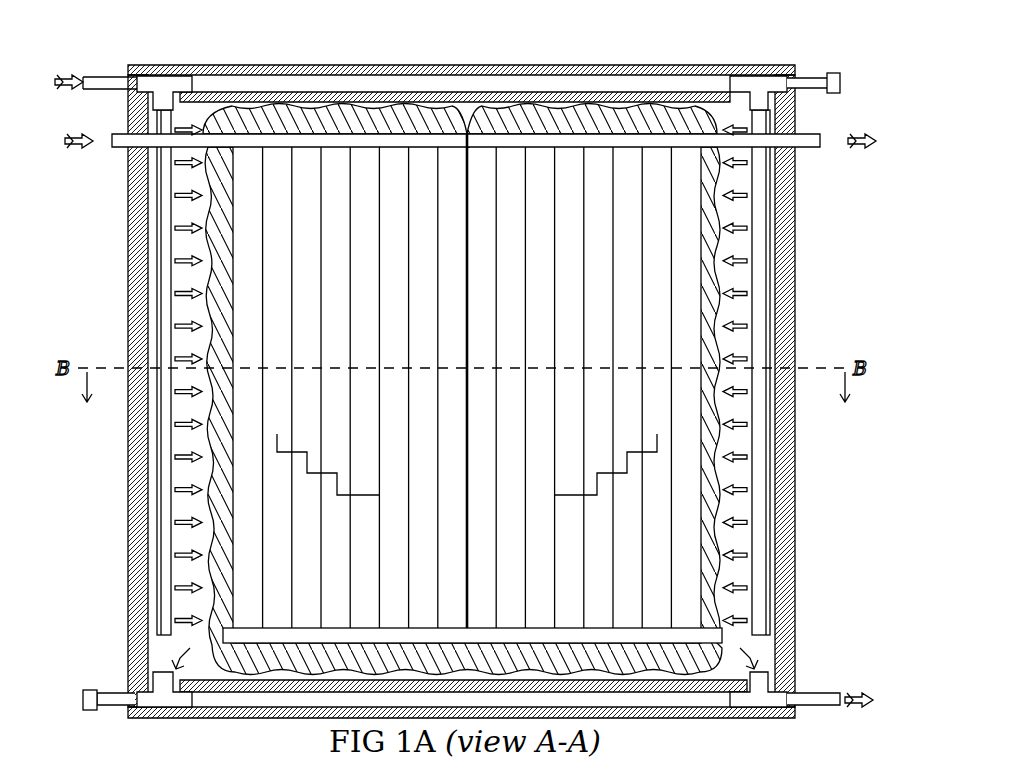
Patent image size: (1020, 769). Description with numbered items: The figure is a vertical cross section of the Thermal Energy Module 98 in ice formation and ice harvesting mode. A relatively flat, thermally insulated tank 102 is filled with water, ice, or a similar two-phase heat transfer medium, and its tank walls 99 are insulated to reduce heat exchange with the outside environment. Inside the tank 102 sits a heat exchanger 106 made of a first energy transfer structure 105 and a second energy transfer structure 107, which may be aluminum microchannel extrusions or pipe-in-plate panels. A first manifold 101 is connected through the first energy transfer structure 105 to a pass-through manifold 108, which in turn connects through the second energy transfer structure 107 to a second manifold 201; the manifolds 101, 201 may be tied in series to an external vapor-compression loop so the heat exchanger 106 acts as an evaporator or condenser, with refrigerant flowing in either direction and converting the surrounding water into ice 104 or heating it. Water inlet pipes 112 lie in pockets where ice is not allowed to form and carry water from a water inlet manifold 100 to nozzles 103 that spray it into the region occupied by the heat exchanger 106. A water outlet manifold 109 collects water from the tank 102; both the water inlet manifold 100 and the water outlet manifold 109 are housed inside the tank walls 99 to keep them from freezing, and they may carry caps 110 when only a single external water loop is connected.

The Thermal Energy Module 98 is at (717, 43).
The tank walls 99 is at (138, 254).
The water inlet manifold 100 is at (107, 85).
The first manifold 101 is at (133, 142).
The tank 102 is at (795, 292).
The nozzles 103 is at (177, 330).
The ice 104 is at (228, 657).
The first energy transfer structure 105 is at (277, 434).
The heat exchanger 106 is at (688, 208).
The second energy transfer structure 107 is at (657, 434).
The pass-through manifold 108 is at (703, 636).
The water outlet manifold 109 is at (812, 703).
The caps 110 is at (840, 84).
The water inlet pipes 112 is at (165, 506).
The second manifold 201 is at (812, 144).